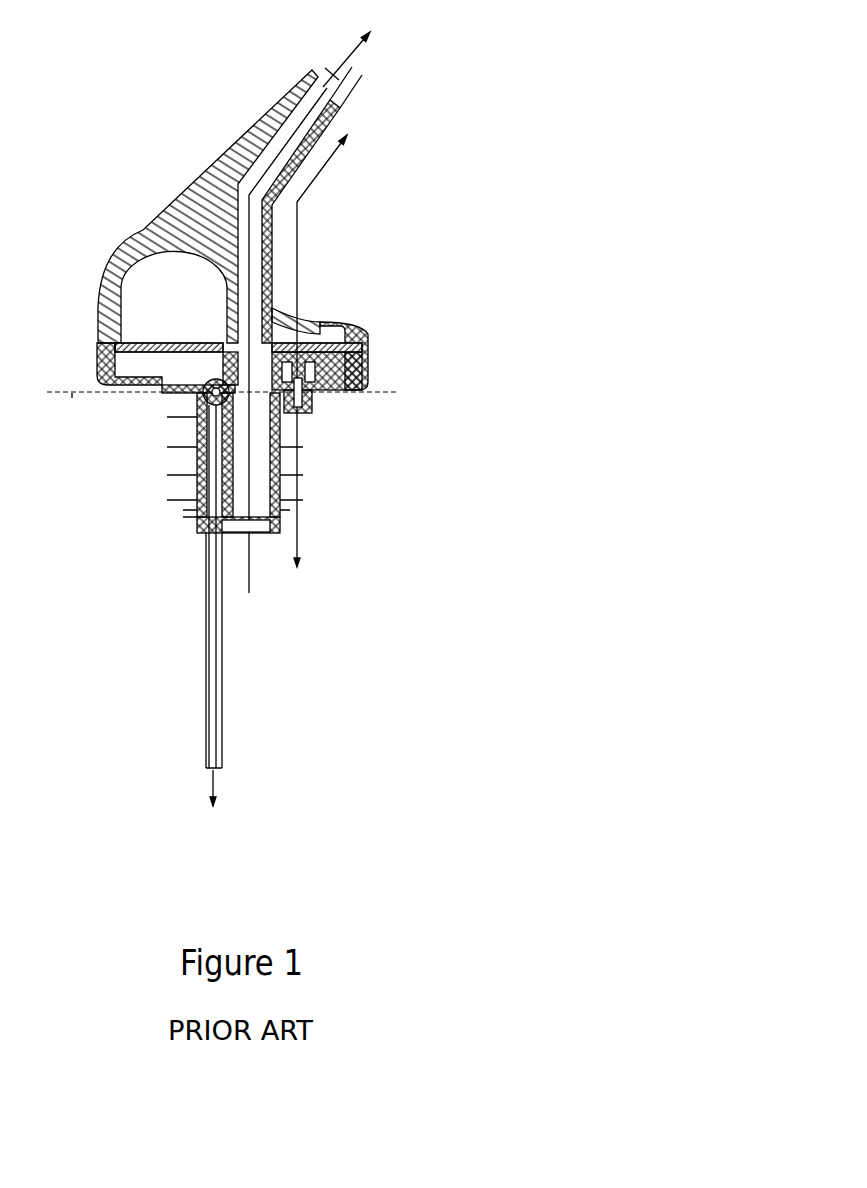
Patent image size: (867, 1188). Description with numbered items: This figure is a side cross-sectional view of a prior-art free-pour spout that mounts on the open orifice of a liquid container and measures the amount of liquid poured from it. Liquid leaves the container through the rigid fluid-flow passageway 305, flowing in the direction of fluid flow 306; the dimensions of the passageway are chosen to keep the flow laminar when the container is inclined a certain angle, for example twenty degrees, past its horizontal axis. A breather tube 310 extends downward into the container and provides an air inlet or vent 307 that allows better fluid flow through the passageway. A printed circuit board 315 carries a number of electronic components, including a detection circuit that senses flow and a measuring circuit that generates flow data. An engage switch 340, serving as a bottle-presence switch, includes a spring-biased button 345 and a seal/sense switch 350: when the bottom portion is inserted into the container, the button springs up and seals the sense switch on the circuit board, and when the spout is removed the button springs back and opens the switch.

The rigid fluid-flow passageway 305 is at (300, 112).
The direction of fluid flow 306 is at (373, 52).
The air inlet (vent) 307 is at (213, 806).
The breather tube 310 is at (202, 657).
The printed circuit board (PCB) 315 is at (173, 343).
The engage switch 340 is at (317, 383).
The spring-biased button 345 is at (343, 398).
The seal/sense switch 350 is at (340, 393).